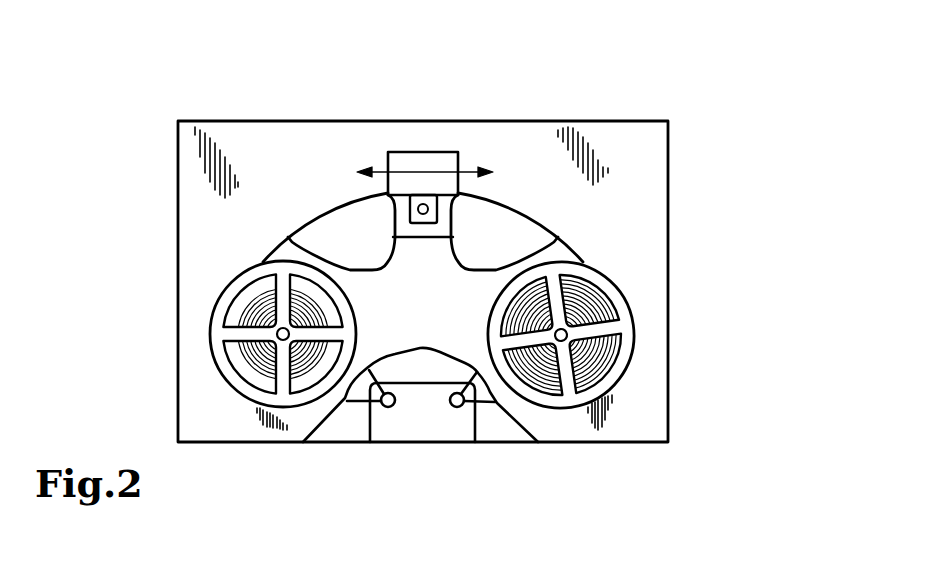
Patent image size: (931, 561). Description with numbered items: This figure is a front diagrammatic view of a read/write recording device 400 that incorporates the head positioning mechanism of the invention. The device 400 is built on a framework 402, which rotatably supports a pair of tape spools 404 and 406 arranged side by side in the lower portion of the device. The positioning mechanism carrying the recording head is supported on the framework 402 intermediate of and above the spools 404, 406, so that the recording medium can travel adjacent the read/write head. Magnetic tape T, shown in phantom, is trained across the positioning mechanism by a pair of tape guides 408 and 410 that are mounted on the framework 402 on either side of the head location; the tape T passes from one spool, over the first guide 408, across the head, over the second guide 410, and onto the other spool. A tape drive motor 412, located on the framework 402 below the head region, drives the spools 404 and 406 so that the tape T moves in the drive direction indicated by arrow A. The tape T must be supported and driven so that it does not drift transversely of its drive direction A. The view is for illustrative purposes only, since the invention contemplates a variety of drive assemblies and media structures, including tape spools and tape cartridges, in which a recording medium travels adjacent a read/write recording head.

The read/write recording device 400 is at (688, 90).
The framework 402 is at (655, 243).
The tape spool 404 is at (218, 371).
The tape spool 406 is at (620, 382).
The tape guide 408 is at (357, 258).
The tape guide 410 is at (482, 262).
The tape drive motor 412 is at (430, 430).
The drive direction arrow A is at (426, 172).
The magnetic tape T is at (272, 258).